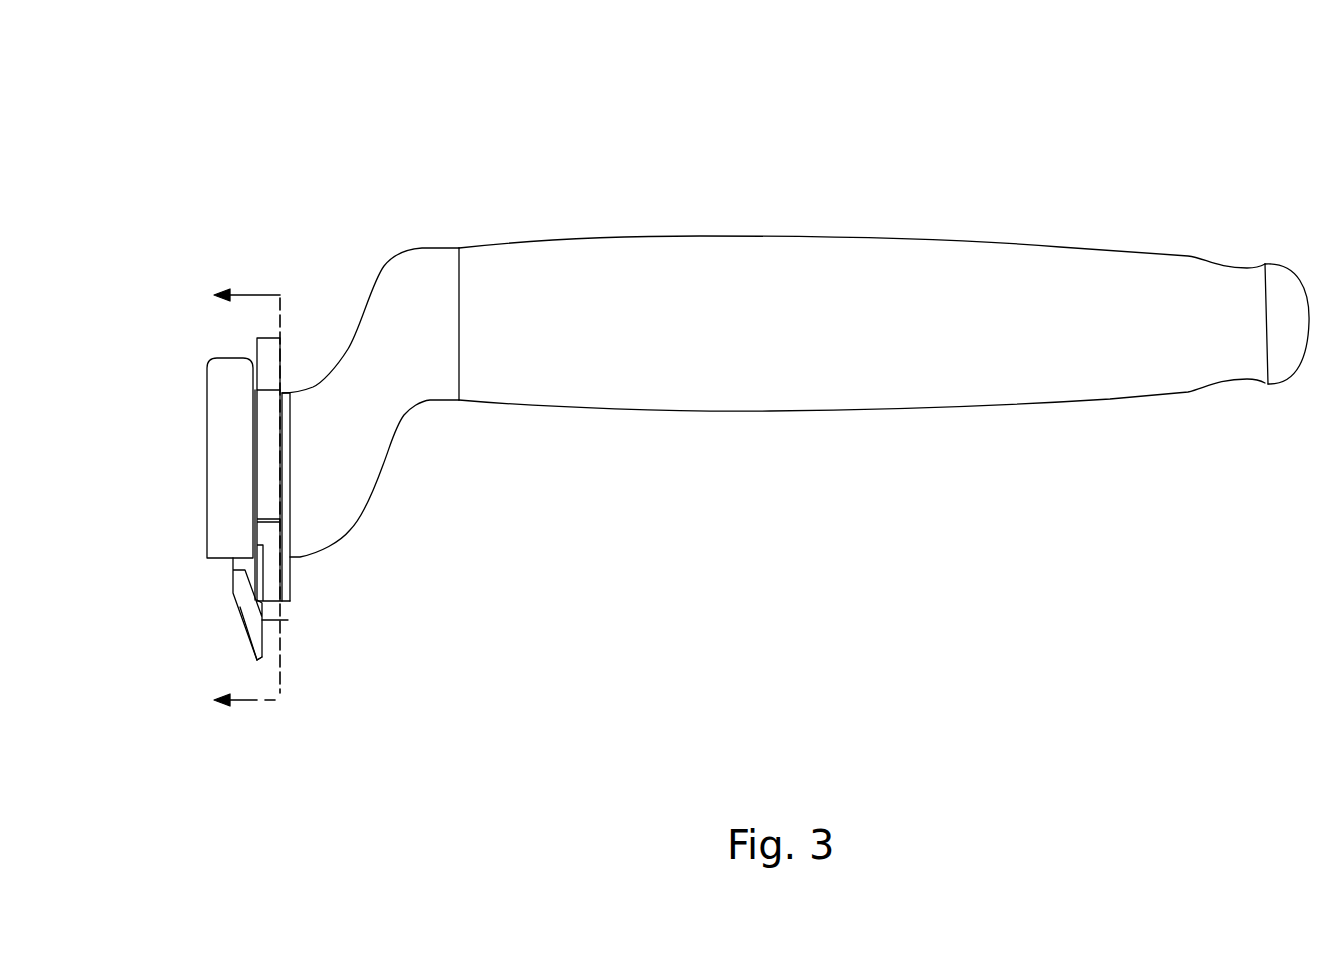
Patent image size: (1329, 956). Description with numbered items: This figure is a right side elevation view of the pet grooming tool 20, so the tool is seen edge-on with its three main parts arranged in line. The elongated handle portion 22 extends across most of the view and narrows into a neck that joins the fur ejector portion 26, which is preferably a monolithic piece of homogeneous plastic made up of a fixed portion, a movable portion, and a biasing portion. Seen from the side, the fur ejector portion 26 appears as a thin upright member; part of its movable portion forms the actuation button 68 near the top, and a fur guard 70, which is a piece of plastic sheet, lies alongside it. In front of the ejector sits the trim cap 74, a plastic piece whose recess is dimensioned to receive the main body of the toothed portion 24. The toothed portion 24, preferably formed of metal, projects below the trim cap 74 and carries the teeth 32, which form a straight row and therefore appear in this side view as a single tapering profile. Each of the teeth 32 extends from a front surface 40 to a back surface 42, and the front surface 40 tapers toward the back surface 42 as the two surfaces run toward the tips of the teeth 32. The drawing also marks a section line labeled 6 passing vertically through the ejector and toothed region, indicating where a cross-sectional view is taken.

The pet grooming tool 20 is at (591, 124).
The handle portion 22 is at (945, 272).
The fur ejector portion 26 is at (271, 362).
The actuation button 68 is at (270, 337).
The fur guard 70 is at (290, 483).
The trim cap 74 is at (225, 431).
The toothed portion 24 is at (243, 575).
The back surface 42 is at (264, 620).
The front surface 40 is at (240, 612).
The teeth 32 is at (256, 643).
The section line 6- 6 is at (232, 500).